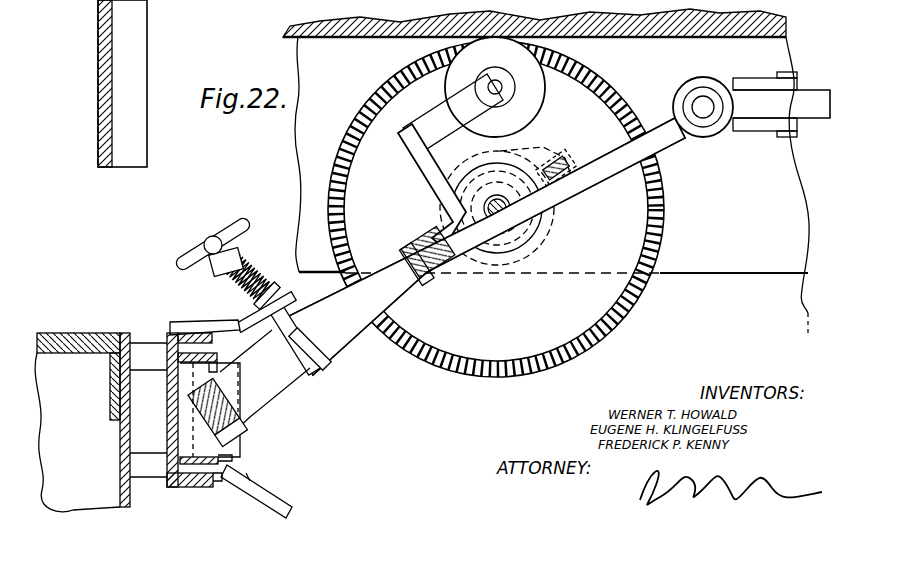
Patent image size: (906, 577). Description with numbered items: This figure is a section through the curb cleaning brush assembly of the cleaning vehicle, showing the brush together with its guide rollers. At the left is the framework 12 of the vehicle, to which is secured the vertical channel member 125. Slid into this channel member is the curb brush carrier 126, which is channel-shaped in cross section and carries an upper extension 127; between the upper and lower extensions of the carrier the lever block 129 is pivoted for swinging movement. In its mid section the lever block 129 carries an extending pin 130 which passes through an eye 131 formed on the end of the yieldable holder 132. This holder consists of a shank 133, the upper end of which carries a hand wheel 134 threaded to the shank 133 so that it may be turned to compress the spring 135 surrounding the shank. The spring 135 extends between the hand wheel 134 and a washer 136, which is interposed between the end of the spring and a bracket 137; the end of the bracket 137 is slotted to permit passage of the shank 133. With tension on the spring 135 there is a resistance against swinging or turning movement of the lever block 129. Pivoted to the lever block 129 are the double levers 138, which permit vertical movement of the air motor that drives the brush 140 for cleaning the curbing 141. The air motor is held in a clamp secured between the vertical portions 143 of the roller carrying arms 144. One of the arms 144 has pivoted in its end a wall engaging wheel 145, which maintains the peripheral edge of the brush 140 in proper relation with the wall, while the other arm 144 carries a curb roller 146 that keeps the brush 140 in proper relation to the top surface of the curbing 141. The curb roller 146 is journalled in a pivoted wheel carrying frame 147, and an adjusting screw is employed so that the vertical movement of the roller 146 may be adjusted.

The framework 12 is at (120, 445).
The vertical channel member 125 is at (212, 487).
The curb brush carrier 126 is at (222, 459).
The upper extension 127 is at (227, 443).
The lever block 129 is at (193, 408).
The extending pin 130 is at (290, 380).
The eye 131 is at (305, 374).
The yieldable holder 132 is at (240, 254).
The shank 133 is at (246, 298).
The hand wheel 134 is at (200, 252).
The spring 135 is at (232, 283).
The washer 136 is at (273, 300).
The bracket 137 is at (237, 326).
The double levers 138 is at (347, 333).
The brush 140 is at (606, 318).
The curbing 141 is at (730, 264).
The vertical portions 143 is at (417, 243).
The roller carrying arms 144 is at (424, 132).
The wall engaging wheel 145 is at (530, 97).
The curb roller 146 is at (765, 110).
The pivoted wheel carrying frame 147 is at (745, 62).